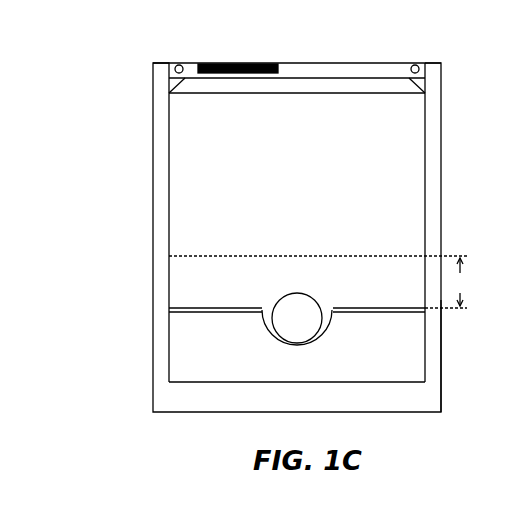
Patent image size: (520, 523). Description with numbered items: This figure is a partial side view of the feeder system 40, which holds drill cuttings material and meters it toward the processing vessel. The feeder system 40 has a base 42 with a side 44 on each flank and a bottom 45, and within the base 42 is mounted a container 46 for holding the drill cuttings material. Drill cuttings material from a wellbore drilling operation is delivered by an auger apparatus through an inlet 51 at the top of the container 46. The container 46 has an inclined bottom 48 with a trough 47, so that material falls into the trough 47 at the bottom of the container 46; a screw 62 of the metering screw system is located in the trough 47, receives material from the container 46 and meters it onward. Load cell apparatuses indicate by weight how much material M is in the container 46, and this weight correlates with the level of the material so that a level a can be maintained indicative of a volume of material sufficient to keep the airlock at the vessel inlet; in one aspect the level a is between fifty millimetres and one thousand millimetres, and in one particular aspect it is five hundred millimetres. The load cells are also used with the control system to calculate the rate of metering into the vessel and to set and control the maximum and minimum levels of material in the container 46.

The feeder system 40 is at (153, 125).
The base 42 is at (441, 365).
The side 44 is at (153, 235).
The bottom 45 is at (158, 397).
The container 46 is at (188, 185).
The trough 47 is at (268, 345).
The inclined bottom 48 is at (188, 308).
The inlet 51 is at (258, 63).
The screw 62 is at (318, 327).
The level a is at (459, 282).
The level M is at (378, 293).